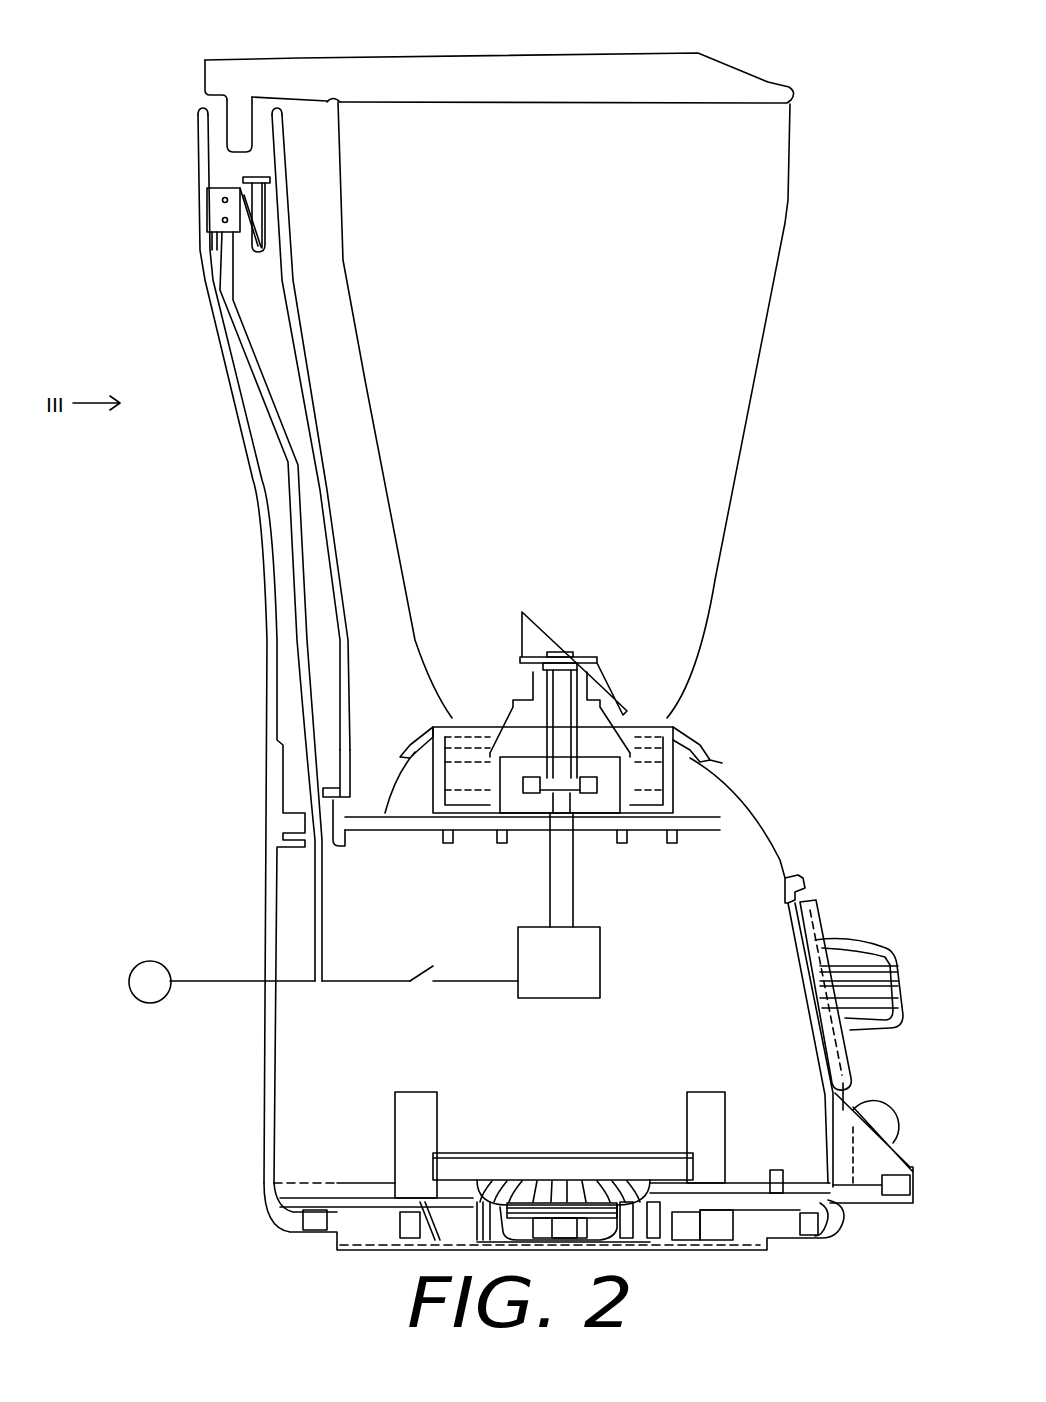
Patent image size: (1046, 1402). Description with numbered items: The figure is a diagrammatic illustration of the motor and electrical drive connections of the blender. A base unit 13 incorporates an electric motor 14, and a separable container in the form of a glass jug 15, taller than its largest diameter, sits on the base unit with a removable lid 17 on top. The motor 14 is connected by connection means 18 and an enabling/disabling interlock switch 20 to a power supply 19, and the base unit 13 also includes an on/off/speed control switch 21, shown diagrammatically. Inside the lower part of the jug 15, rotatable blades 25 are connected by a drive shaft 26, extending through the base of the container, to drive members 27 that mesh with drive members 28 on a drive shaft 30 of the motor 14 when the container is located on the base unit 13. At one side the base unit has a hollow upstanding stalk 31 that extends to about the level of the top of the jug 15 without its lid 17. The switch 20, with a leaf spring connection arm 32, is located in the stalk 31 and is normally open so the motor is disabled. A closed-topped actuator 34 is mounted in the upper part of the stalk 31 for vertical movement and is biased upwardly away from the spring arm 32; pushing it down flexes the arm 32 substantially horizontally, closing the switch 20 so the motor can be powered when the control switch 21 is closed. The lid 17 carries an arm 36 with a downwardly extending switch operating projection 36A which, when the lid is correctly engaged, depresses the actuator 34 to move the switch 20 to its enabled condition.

The base unit 13 is at (760, 1042).
The electric motor 14 is at (550, 975).
The glass jug 15 is at (698, 532).
The removable lid 17 is at (682, 82).
The connection means 18 is at (365, 985).
The power supply 19 is at (136, 964).
The interlock switch 20 is at (217, 205).
The on/off/speed control switch 21 is at (422, 962).
The rotatable blades 25 is at (603, 690).
The drive shaft 26 is at (562, 725).
The drive members 27 is at (600, 770).
The drive members 28 is at (587, 802).
The drive shaft of the motor 30 is at (560, 911).
The stalk 31 is at (278, 510).
The leaf spring connection arm 32 is at (250, 235).
The actuator 34 is at (258, 200).
The arm 36 is at (223, 72).
The switch operating projection 36A is at (242, 117).